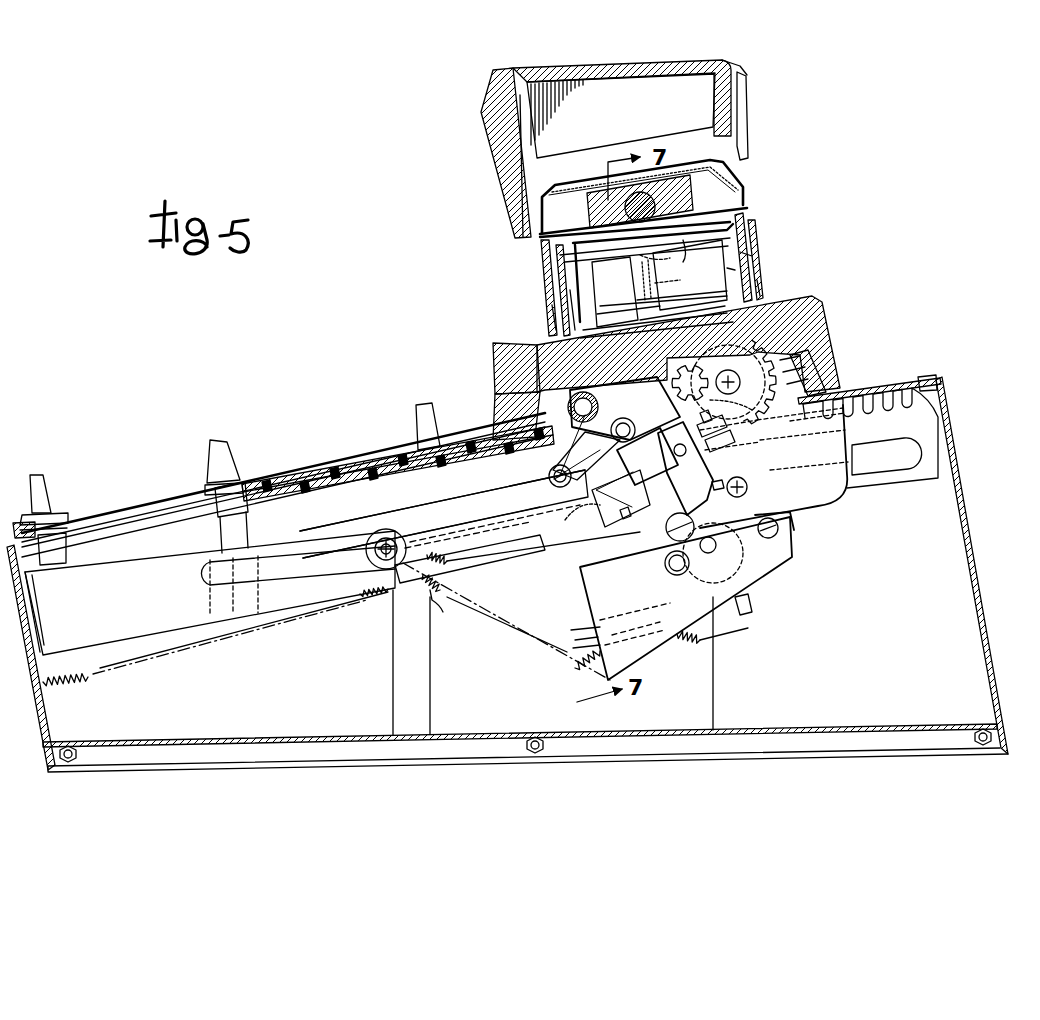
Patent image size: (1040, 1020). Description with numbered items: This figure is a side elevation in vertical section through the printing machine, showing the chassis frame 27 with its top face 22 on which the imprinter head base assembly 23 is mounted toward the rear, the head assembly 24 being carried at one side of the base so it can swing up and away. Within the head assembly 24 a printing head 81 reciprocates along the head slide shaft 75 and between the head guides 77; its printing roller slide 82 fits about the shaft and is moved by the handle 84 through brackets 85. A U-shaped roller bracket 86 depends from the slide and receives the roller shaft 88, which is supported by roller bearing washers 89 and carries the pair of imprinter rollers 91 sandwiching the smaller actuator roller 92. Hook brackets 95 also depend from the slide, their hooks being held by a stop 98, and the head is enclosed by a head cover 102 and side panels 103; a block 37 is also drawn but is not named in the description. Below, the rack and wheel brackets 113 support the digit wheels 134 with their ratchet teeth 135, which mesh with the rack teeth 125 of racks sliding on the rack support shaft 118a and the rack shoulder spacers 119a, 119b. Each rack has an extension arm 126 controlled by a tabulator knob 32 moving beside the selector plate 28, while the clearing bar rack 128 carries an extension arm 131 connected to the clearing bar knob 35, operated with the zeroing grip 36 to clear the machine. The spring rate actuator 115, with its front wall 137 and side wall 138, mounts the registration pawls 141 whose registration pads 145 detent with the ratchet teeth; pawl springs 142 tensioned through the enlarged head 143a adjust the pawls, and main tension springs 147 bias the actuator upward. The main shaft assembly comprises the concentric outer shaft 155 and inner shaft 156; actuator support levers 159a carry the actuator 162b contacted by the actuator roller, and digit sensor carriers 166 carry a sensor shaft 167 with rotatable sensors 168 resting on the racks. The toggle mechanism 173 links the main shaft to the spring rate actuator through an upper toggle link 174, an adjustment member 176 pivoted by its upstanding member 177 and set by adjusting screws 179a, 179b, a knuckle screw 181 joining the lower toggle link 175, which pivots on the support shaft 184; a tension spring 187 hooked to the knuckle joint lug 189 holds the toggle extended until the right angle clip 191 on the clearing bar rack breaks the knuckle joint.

The top face 22 is at (170, 520).
The imprinter head base assembly 23 is at (468, 362).
The head assembly 24 is at (503, 240).
The chassis frame 27 is at (975, 575).
The selector plate 28 is at (272, 478).
The tabulator knobs 32 is at (230, 444).
The clearing bar knob 35 is at (44, 472).
The zeroing grip 36 is at (416, 420).
The head block 37 is at (815, 300).
The head slide shaft 75 is at (626, 212).
The head guides 77 is at (546, 262).
The printing head 81 is at (752, 108).
The printing roller slide 82 is at (690, 197).
The handle 84 is at (712, 68).
The brackets 85 is at (745, 172).
The roller bracket 86 is at (570, 289).
The roller shaft 88 is at (553, 306).
The roller bearing washers 89 is at (755, 258).
The imprinter rollers 91 is at (659, 283).
The actuator roller 92 is at (680, 277).
The hook brackets 95 is at (686, 245).
The stop 98 is at (657, 277).
The head cover 102 is at (571, 190).
The side panels 103 is at (556, 282).
The rack and wheel brackets 113 is at (440, 512).
The spring rate actuator 115 is at (772, 578).
The rack support shaft 118a is at (382, 530).
The rack shoulder spacers 119a is at (412, 538).
The rack shoulder spacers 119b is at (770, 468).
The rack teeth 125 is at (874, 392).
The extension arm 126 is at (248, 505).
The clearing bar rack 128 is at (210, 608).
The extension arm 131 is at (73, 549).
The digit wheels 134 is at (812, 340).
The ratchet teeth 135 is at (815, 358).
The front wall 137 is at (595, 576).
The side wall 138 is at (790, 552).
The registration pawls 141 is at (750, 616).
The pawl springs 142 is at (652, 620).
The enlarged head 143a is at (572, 632).
The registration pad 145 is at (706, 389).
The main tension springs 147 is at (440, 612).
The outer shaft 155 is at (516, 416).
The inner shaft 156 is at (572, 398).
The actuator support levers 159a is at (617, 420).
The actuator 162b is at (625, 404).
The digit sensor carriers 166 is at (580, 462).
The sensor shaft 167 is at (549, 472).
The rotatable sensors 168 is at (552, 478).
The toggle mechanism 173 is at (740, 449).
The upper toggle link 174 is at (647, 456).
The lower toggle link 175 is at (654, 510).
The adjustment member 176 is at (750, 487).
The upstanding member 177 is at (738, 456).
The adjusting screw 179a is at (572, 520).
The adjusting screw 179b is at (726, 411).
The knuckle screw 181 is at (758, 530).
The support shaft 184 is at (709, 563).
The tension spring 187 is at (455, 560).
The knuckle joint lug 189 is at (665, 540).
The right angle clip 191 is at (470, 575).